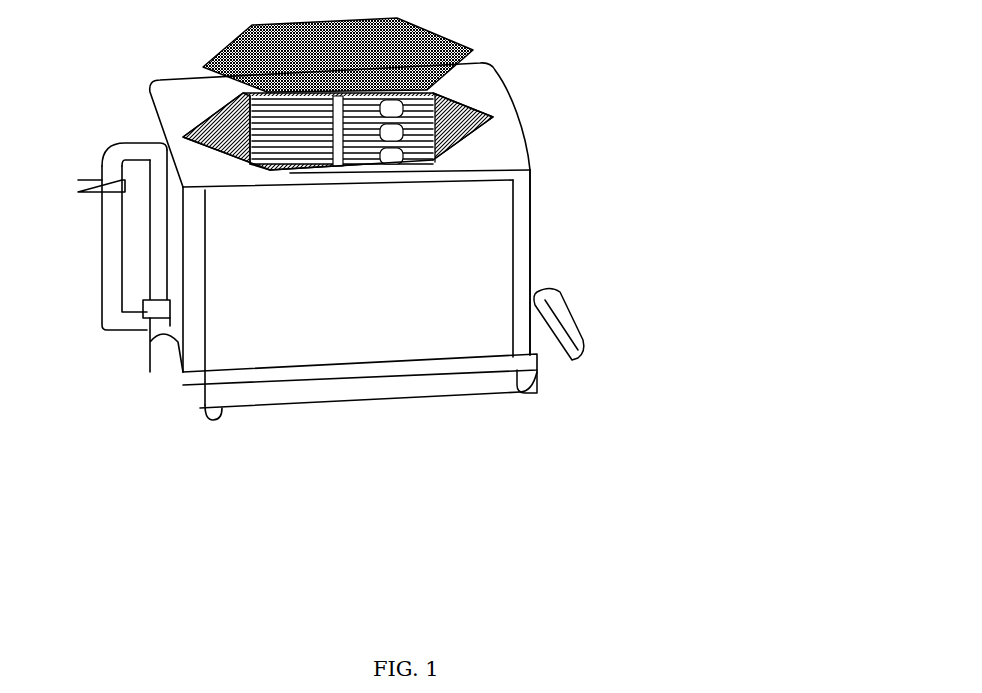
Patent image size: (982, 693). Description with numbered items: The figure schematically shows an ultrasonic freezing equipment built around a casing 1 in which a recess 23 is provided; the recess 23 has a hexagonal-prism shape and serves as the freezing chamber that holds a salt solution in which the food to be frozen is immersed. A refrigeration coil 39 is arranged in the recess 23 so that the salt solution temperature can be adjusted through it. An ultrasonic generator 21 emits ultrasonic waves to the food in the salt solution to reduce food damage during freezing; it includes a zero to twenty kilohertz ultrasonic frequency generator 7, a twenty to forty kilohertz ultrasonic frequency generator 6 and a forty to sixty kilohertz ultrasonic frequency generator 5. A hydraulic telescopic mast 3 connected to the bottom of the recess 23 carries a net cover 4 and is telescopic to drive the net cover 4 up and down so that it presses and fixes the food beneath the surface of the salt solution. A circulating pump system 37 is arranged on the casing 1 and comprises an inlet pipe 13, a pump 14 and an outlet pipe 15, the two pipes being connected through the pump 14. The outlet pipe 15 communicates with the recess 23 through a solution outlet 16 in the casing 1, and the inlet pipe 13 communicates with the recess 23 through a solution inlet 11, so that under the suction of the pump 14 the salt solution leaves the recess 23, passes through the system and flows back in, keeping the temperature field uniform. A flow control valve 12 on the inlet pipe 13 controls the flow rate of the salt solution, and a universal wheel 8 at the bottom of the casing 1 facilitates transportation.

The casing 1 is at (472, 303).
The hydraulic telescopic mast 3 is at (340, 127).
The net cover 4 is at (433, 33).
The 40-60 KHz ultrasonic frequency generator 5 is at (467, 103).
The 20-40 KHz ultrasonic frequency generator 6 is at (465, 135).
The 0-20 KHz ultrasonic frequency generator 7 is at (318, 172).
The universal wheel 8 is at (505, 397).
The solution inlet 11 is at (167, 150).
The flow control valve 12 is at (96, 184).
The inlet pipe 13 is at (113, 293).
The pump 14 is at (155, 330).
The outlet pipe 15 is at (210, 407).
The solution outlet 16 is at (535, 297).
The ultrasonic generator 21 is at (471, 251).
The recess 23 is at (288, 167).
The circulating pump system 37 is at (156, 303).
The refrigeration coil 39 is at (220, 140).